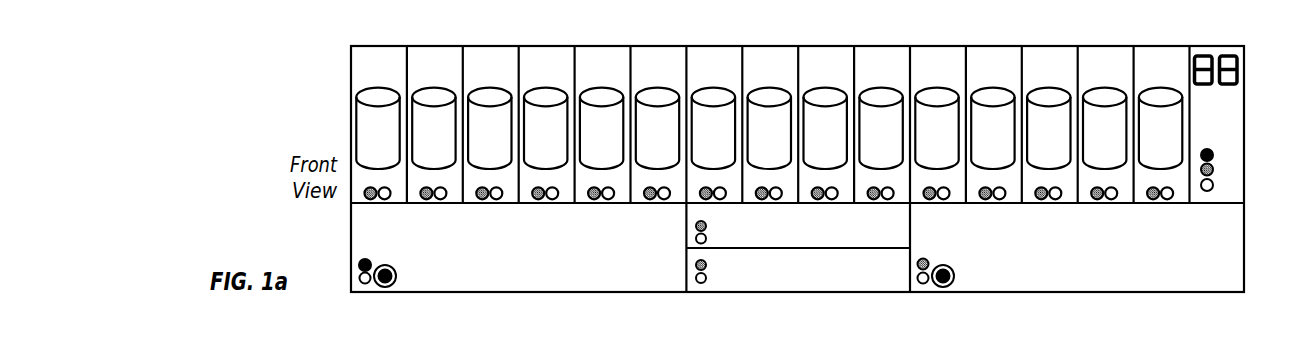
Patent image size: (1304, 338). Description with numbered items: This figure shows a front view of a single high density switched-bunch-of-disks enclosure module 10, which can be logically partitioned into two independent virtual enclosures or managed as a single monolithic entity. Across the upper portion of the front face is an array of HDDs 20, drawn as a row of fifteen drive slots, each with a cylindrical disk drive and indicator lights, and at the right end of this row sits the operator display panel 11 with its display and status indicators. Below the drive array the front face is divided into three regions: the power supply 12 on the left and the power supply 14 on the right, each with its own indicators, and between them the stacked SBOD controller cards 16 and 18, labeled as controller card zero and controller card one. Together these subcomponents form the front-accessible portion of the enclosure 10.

The high density SBOD enclosure module 10 is at (351, 80).
The operator display panel 11 is at (1234, 182).
The power supply 12 is at (638, 277).
The power supply 14 is at (1180, 278).
The SBOD controller card 16 is at (892, 235).
The SBOD controller card 18 is at (783, 287).
The HDD 20 is at (392, 143).